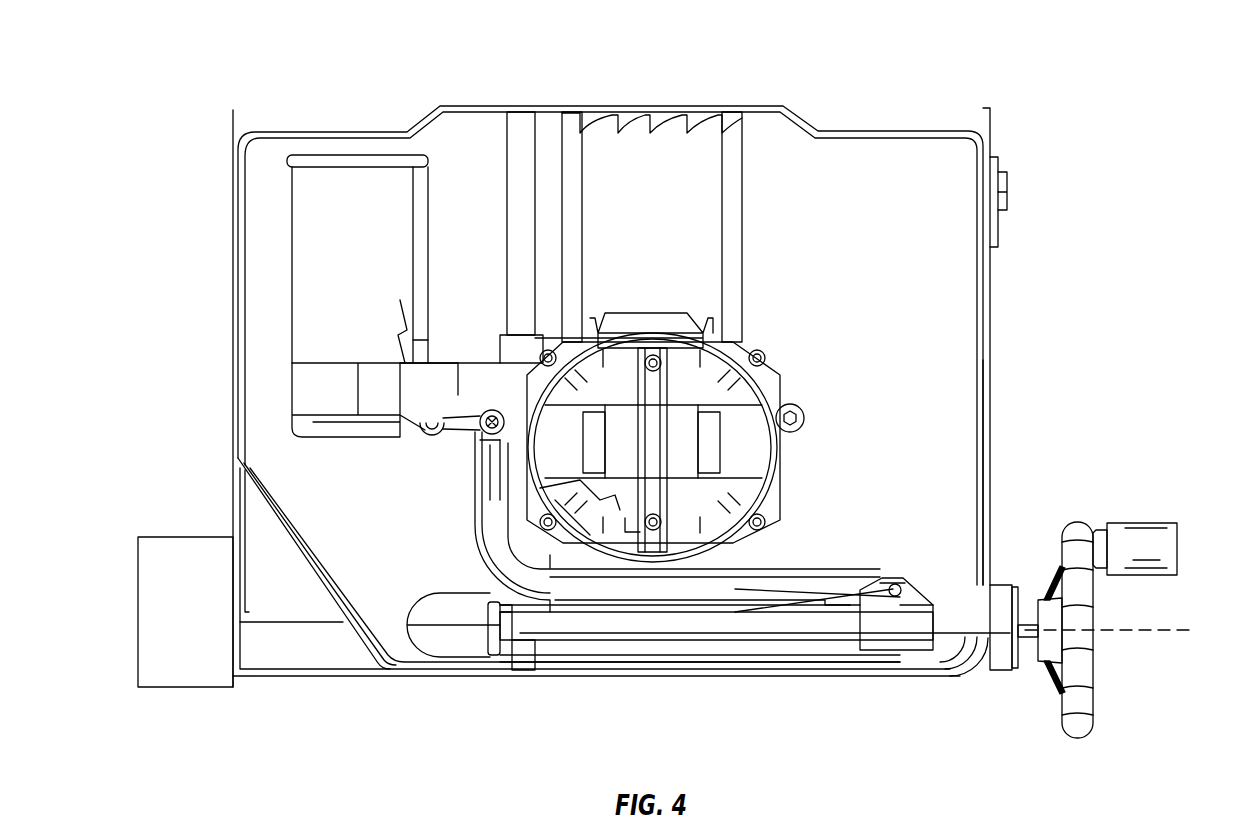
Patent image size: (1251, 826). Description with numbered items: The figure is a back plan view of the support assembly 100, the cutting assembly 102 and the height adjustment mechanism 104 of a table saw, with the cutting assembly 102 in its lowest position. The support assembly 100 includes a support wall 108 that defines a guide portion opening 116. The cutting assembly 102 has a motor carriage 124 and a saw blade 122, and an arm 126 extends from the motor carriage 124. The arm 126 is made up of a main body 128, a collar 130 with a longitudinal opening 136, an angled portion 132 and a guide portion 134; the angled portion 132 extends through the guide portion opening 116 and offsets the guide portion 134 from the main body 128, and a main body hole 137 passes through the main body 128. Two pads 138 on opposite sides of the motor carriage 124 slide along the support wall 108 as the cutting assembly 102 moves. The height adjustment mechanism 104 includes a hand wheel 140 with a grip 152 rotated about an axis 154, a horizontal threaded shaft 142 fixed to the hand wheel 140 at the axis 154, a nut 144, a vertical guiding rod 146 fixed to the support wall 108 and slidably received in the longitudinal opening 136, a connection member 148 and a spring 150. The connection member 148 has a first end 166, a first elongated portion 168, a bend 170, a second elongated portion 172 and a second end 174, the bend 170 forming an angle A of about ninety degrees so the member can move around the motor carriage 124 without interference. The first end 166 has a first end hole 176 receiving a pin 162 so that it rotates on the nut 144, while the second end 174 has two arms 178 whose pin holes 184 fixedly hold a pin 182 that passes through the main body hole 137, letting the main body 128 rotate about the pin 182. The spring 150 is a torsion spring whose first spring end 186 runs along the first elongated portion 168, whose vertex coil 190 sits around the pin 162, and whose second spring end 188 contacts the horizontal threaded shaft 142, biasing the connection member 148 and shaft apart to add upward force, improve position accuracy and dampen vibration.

The support assembly 100 is at (201, 109).
The cutting assembly 102 is at (768, 287).
The height adjustment mechanism 104 is at (862, 762).
The support wall 108 is at (980, 350).
The guide portion opening 116 is at (297, 242).
The saw blade 122 is at (695, 163).
The motor carriage 124 is at (775, 395).
The arm 126 is at (352, 342).
The main body 128 is at (458, 373).
The collar 130 is at (507, 343).
The angled portion 132 is at (368, 395).
The guide portion 134 is at (315, 393).
The longitudinal opening 136 is at (543, 353).
The main body hole 137 is at (494, 410).
The pads 138 is at (805, 418).
The hand wheel 140 is at (1080, 703).
The horizontal threaded shaft 142 is at (958, 632).
The nut 144 is at (890, 617).
The vertical guiding rod 146 is at (518, 133).
The connection member 148 is at (625, 590).
The spring 150 is at (875, 600).
The grip 152 is at (1156, 535).
The axis 154 is at (1157, 632).
The pin 162 is at (901, 590).
The first end 166 is at (830, 600).
The first elongated portion 168 is at (700, 590).
The bend 170 is at (500, 572).
The second elongated portion 172 is at (484, 512).
The second end 174 is at (486, 437).
The first end hole 176 is at (910, 580).
The arms 178 is at (493, 440).
The pin 182 is at (478, 424).
The pin holes 184 is at (478, 432).
The first spring end 186 is at (775, 590).
The second spring end 188 is at (760, 600).
The vertex coil 190 is at (905, 597).
The angle A is at (548, 560).